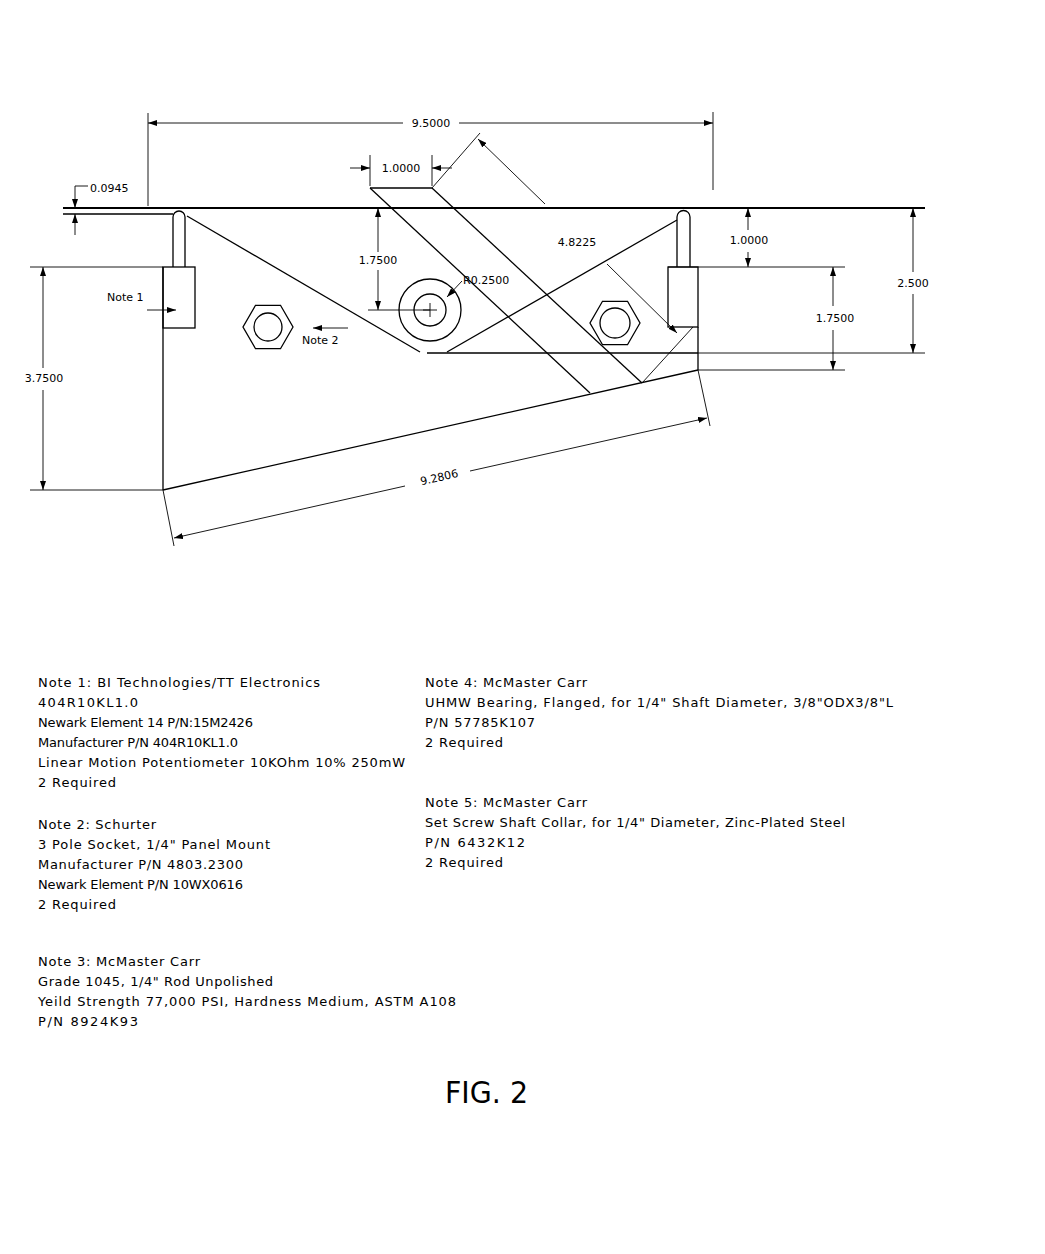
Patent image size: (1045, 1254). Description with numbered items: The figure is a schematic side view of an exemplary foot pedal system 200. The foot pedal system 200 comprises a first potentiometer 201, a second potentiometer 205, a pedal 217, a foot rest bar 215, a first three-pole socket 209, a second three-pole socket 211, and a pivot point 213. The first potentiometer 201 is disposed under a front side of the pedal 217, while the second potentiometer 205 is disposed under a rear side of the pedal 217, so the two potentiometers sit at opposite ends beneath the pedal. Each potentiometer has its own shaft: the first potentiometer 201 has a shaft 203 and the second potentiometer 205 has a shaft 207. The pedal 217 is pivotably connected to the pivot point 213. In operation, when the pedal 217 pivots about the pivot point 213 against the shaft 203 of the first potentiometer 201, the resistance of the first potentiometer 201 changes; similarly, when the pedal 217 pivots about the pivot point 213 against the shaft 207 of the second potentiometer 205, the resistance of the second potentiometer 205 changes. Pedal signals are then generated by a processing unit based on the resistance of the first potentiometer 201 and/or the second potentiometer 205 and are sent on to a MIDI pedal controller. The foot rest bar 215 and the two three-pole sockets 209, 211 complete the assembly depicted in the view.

The foot pedal system 200 is at (143, 45).
The first potentiometer 201 is at (713, 327).
The shaft 203 is at (697, 240).
The second potentiometer 205 is at (193, 338).
The shaft 207 is at (200, 216).
The first three-pole socket 209 is at (602, 363).
The second three-pole socket 211 is at (282, 367).
The pivot point 213 is at (422, 350).
The foot rest bar 215 is at (382, 140).
The pedal 217 is at (618, 177).